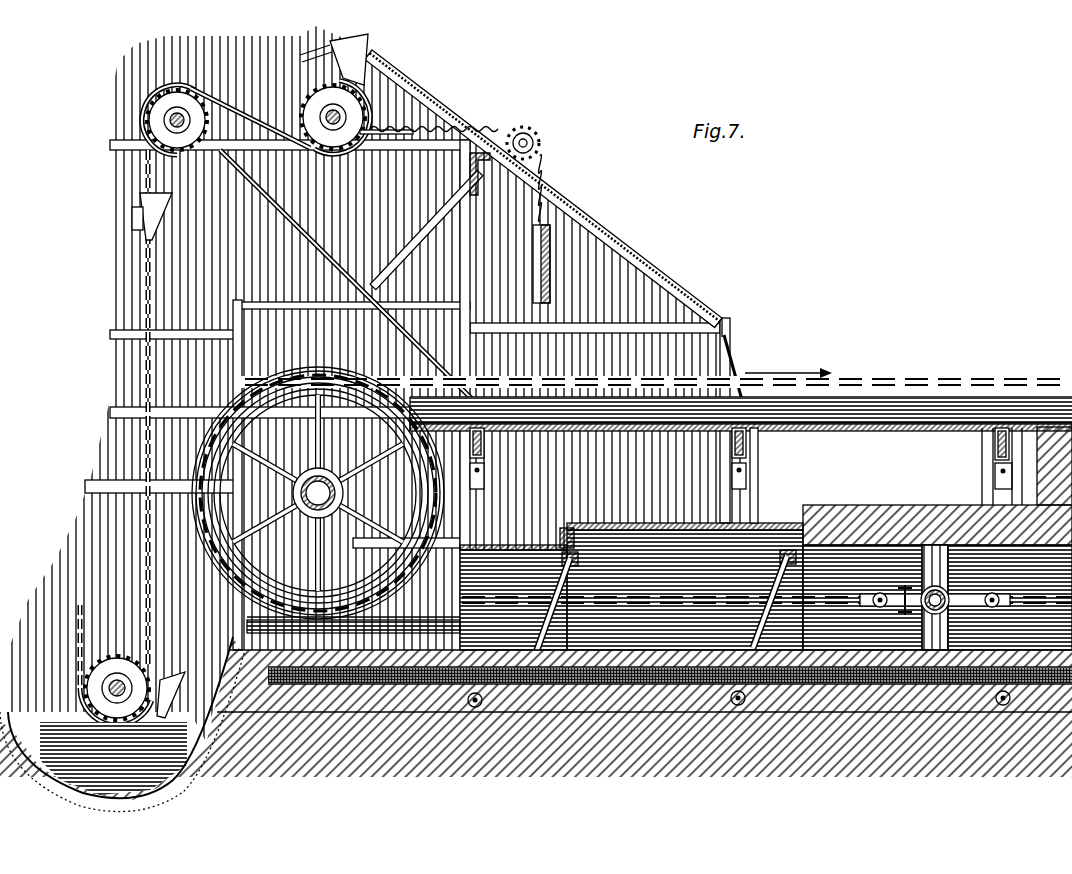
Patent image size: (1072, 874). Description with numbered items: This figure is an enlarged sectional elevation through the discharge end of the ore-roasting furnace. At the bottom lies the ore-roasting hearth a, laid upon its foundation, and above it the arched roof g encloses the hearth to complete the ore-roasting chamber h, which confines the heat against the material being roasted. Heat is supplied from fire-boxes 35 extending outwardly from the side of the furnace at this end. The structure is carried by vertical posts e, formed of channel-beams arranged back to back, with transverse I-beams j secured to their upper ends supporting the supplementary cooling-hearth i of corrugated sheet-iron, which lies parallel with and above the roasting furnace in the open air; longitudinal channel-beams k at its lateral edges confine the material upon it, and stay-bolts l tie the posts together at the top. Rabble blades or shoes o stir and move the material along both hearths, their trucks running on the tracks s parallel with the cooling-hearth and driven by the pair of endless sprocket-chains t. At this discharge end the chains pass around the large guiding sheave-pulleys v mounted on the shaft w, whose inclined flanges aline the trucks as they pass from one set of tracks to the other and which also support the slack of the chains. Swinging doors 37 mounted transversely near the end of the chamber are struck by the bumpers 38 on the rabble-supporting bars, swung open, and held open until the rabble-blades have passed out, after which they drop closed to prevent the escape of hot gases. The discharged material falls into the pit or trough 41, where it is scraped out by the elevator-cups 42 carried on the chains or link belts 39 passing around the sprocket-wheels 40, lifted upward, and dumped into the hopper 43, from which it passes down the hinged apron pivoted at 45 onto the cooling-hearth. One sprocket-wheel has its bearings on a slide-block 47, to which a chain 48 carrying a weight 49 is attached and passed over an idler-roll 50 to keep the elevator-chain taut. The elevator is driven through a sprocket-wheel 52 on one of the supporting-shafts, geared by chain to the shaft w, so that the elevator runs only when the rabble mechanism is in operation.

The fire-boxes 35 is at (1048, 430).
The swinging doors 37 is at (558, 568).
The bumpers 38 is at (653, 563).
The chains or link belts 39 is at (265, 143).
The sprocket-wheels 40 is at (326, 140).
The pit or trough 41 is at (122, 724).
The elevator-cups 42 is at (343, 58).
The hopper 43 is at (376, 383).
The pivot 45 is at (345, 298).
The slide-block 47 is at (395, 130).
The chain 48 is at (503, 126).
The weight 49 is at (549, 277).
The idler-roll 50 is at (532, 140).
The sprocket-wheel 52 is at (198, 118).
The endless sprocket-chains t is at (656, 474).
The channel-beams k is at (866, 410).
The large guiding sheave-pulleys v is at (238, 402).
The tracks s is at (320, 420).
The shaft w is at (328, 482).
The I-beams j is at (485, 443).
The stay-bolts l is at (485, 470).
The vertical posts e is at (485, 482).
The supplementary cooling-hearth i is at (998, 725).
The ore-roasting chamber h is at (838, 575).
The arched roof g is at (945, 570).
The rabble blades or shoes o is at (935, 567).
The ore-roasting hearth a is at (566, 535).